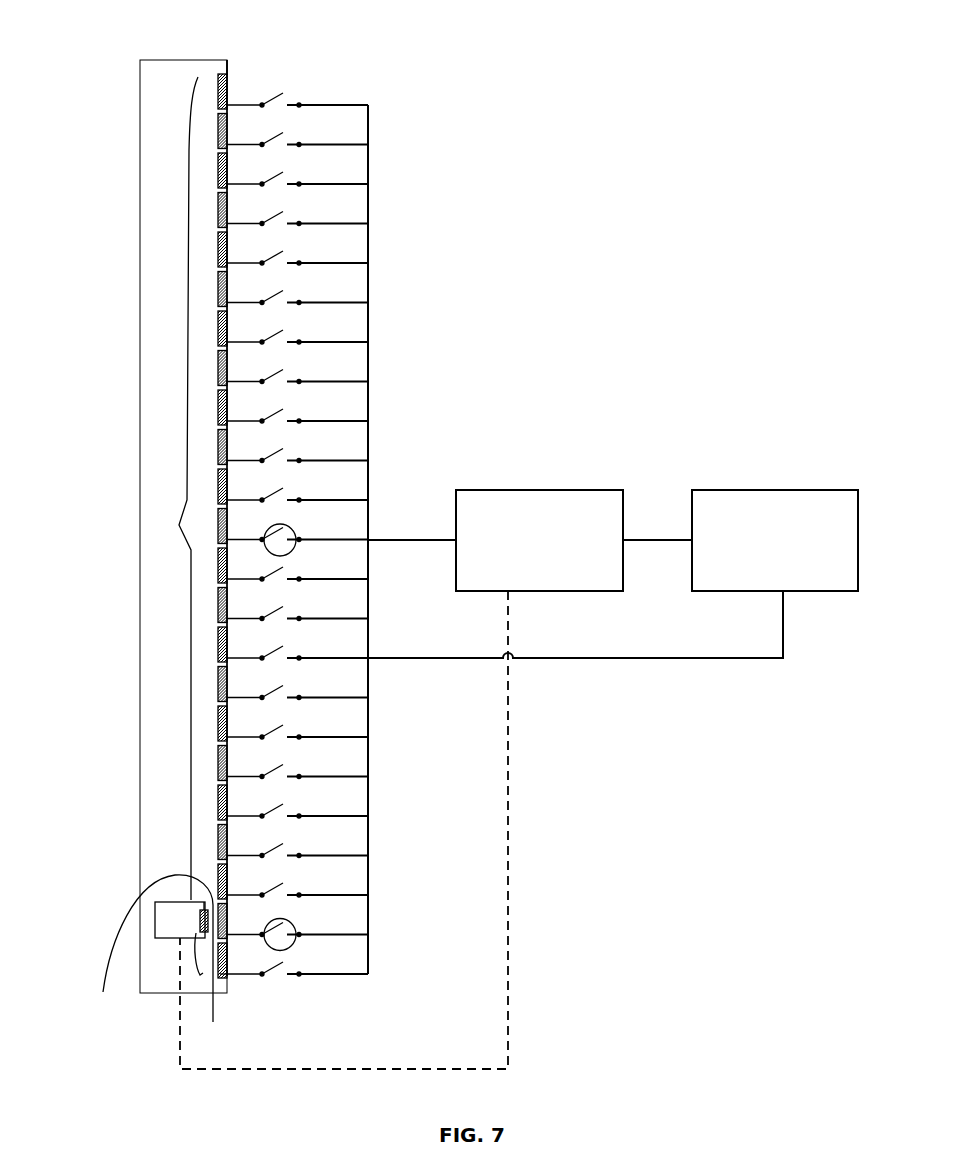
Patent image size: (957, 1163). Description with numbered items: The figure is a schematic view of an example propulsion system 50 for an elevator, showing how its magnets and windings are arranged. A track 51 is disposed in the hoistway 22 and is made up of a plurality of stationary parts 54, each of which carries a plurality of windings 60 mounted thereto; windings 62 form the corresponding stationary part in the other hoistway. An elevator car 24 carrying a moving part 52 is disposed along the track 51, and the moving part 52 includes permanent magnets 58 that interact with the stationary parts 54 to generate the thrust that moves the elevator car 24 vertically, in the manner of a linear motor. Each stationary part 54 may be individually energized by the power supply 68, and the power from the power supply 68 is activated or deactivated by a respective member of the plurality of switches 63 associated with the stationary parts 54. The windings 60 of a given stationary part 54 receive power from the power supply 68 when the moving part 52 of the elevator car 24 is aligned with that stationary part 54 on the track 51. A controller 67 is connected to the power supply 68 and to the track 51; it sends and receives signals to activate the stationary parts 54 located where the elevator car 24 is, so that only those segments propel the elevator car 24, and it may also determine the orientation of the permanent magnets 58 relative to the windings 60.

The hoistway 22 is at (188, 73).
The elevator car 24 is at (173, 925).
The propulsion system 50 is at (118, 892).
The track 51 is at (230, 56).
The moving part 52 is at (212, 975).
The stationary part 54 is at (293, 526).
The permanent magnets 58 is at (103, 992).
The windings 60 is at (228, 974).
The windings 62 is at (228, 974).
The switches 63 is at (289, 550).
The controller 67 is at (401, 779).
The power supply 68 is at (613, 574).